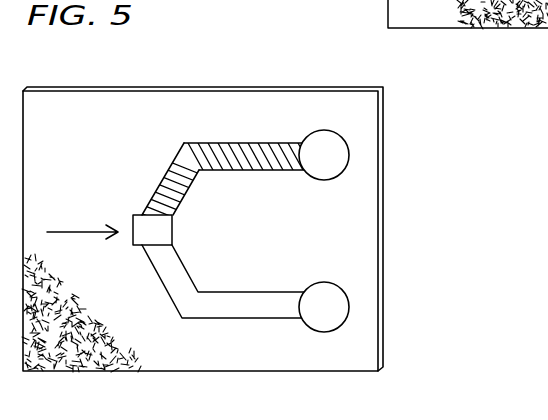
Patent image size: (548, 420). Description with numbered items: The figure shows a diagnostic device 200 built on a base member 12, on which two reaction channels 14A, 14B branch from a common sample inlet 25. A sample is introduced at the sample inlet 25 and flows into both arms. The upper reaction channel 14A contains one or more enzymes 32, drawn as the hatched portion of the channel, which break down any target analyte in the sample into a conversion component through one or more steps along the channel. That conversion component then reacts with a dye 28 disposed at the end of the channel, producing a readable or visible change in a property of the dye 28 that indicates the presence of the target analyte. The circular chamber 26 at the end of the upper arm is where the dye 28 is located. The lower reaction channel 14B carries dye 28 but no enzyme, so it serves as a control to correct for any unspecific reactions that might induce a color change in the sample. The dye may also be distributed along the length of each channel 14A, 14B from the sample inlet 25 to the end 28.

The base member 12 is at (125, 117).
The reaction channel 14A is at (263, 170).
The reaction channel 14B is at (260, 292).
The sample inlet 25 is at (158, 234).
The detection chamber 26 is at (341, 137).
The dye 28 is at (326, 155).
The enzymes 32 is at (183, 170).
The device 200 is at (428, 207).